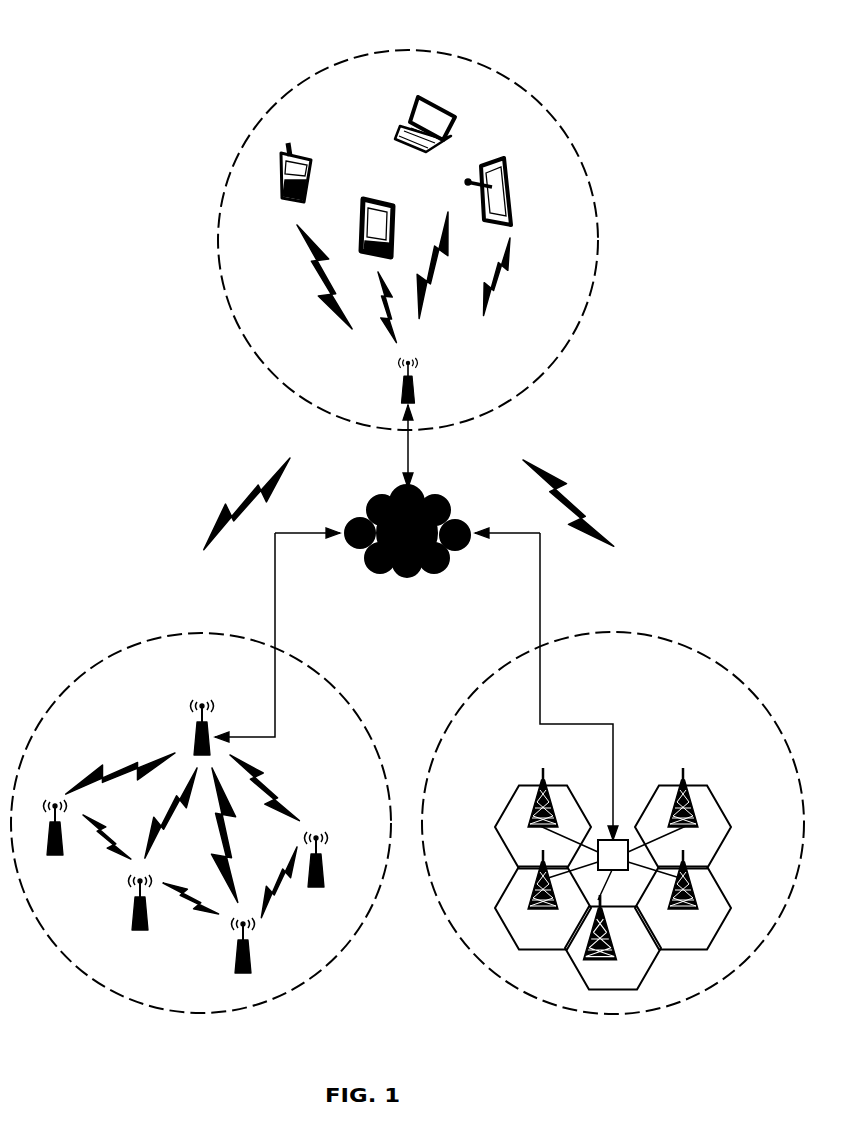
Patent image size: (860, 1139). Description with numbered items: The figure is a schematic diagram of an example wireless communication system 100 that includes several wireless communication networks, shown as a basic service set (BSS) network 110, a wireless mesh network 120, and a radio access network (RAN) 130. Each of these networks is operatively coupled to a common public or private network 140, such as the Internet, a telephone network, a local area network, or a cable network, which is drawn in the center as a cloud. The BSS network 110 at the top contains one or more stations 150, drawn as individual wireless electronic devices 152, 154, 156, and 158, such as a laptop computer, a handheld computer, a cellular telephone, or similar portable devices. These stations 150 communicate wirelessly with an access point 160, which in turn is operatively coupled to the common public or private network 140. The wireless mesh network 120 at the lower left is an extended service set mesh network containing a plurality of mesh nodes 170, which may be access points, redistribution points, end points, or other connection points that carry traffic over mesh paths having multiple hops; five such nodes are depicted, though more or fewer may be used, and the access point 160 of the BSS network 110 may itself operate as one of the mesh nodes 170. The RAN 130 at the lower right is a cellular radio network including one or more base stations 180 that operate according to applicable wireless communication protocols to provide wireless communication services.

The wireless communication system 100 is at (96, 44).
The basic service set (BSS) network 110 is at (407, 45).
The wireless mesh network 120 is at (203, 636).
The radio access network 130 is at (615, 640).
The common public or private network 140 is at (408, 578).
The stations 150 is at (374, 118).
The station 152 is at (443, 108).
The station 154 is at (501, 172).
The station 156 is at (300, 160).
The station 158 is at (370, 197).
The access point 160 is at (412, 380).
The mesh nodes 170 is at (153, 719).
The base stations 180 is at (634, 747).